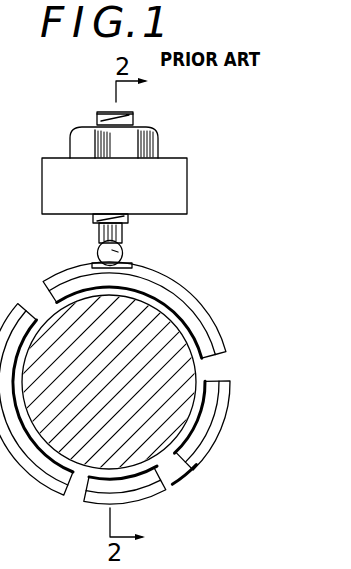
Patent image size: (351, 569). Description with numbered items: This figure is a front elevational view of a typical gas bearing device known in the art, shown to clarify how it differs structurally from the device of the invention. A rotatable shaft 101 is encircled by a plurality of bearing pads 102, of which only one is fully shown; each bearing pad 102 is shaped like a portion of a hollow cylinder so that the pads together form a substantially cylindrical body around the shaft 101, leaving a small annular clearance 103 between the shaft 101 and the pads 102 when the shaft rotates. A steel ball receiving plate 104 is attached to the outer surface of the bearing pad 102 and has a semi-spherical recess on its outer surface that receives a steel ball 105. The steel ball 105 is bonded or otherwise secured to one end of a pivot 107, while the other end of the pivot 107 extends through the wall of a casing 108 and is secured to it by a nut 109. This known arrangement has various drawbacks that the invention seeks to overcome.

The rotatable shaft 101 is at (153, 443).
The bearing pad 102 is at (188, 302).
The annular clearance 103 is at (200, 365).
The steel ball receiving plate 104 is at (92, 263).
The steel ball 105 is at (123, 253).
The pivot 107 is at (134, 118).
The casing 108 is at (176, 195).
The nut 109 is at (158, 147).